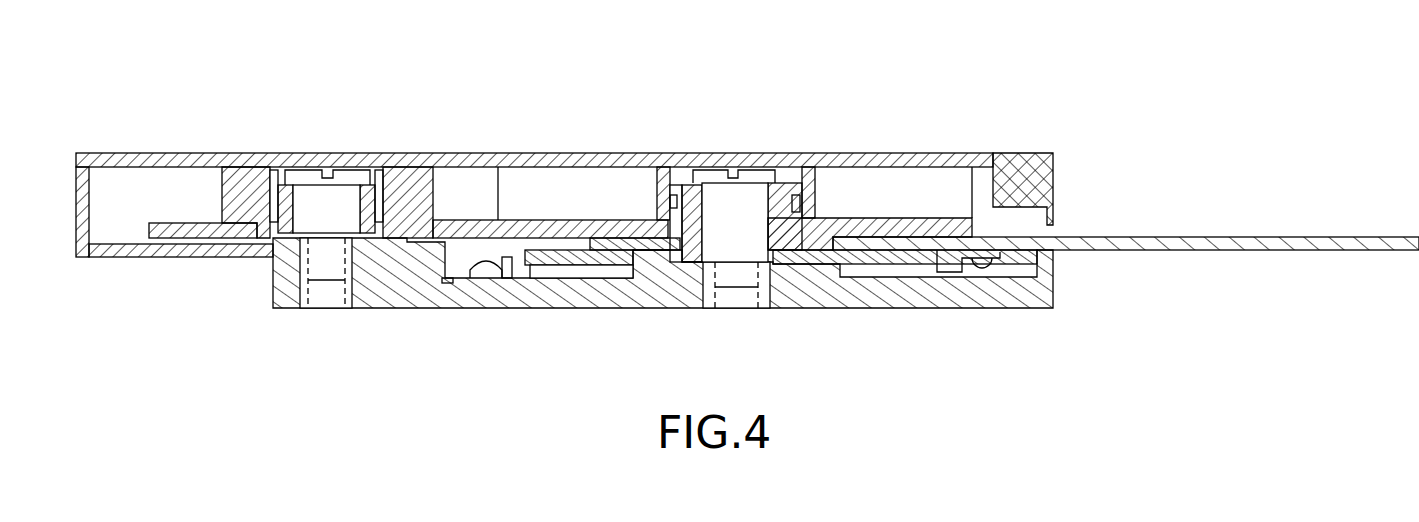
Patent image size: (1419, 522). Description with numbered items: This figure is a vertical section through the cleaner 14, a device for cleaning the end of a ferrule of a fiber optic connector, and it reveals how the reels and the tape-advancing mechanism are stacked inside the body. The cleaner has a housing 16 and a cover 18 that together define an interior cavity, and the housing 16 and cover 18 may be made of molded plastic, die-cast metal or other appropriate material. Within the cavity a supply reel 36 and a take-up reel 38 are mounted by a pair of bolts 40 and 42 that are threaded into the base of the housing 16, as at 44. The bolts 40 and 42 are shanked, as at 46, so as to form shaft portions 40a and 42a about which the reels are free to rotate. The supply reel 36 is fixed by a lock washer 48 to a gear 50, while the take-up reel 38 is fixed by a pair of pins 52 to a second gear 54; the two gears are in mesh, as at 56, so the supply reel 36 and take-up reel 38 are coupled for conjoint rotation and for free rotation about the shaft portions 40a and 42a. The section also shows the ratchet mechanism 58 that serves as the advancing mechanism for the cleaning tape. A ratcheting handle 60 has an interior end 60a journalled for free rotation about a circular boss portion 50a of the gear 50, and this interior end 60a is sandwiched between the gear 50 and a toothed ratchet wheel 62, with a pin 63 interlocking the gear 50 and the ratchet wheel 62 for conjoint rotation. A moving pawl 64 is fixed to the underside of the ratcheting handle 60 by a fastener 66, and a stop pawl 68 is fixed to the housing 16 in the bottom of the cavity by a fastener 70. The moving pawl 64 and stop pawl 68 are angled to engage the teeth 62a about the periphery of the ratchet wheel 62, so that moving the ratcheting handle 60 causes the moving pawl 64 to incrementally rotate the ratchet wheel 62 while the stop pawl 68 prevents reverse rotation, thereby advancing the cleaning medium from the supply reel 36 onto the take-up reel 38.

The cleaner 14 is at (1106, 92).
The housing 16 is at (840, 290).
The cover 18 is at (597, 160).
The supply reel 36 is at (803, 183).
The take-up reel 38 is at (430, 170).
The bolt 40 is at (753, 175).
The shaft portion 40a is at (718, 183).
The bolt 42 is at (347, 170).
The shaft portion 42a is at (313, 200).
The threaded base location 44 is at (347, 300).
The shank 46 is at (283, 308).
The lock washer 48 is at (800, 210).
The gear 50 is at (880, 235).
The circular boss portion 50a is at (650, 247).
The pins 52 is at (265, 185).
The second gear 54 is at (225, 240).
The mesh 56 is at (500, 225).
The ratchet mechanism 58 is at (1032, 230).
The ratcheting handle 60 is at (1203, 250).
The interior end 60a is at (600, 245).
The toothed ratchet wheel 62 is at (893, 255).
The teeth 62a is at (1040, 150).
The pin 63 is at (687, 262).
The moving pawl 64 is at (948, 270).
The fastener 66 is at (990, 273).
The stop pawl 68 is at (500, 287).
The fastener 70 is at (467, 280).